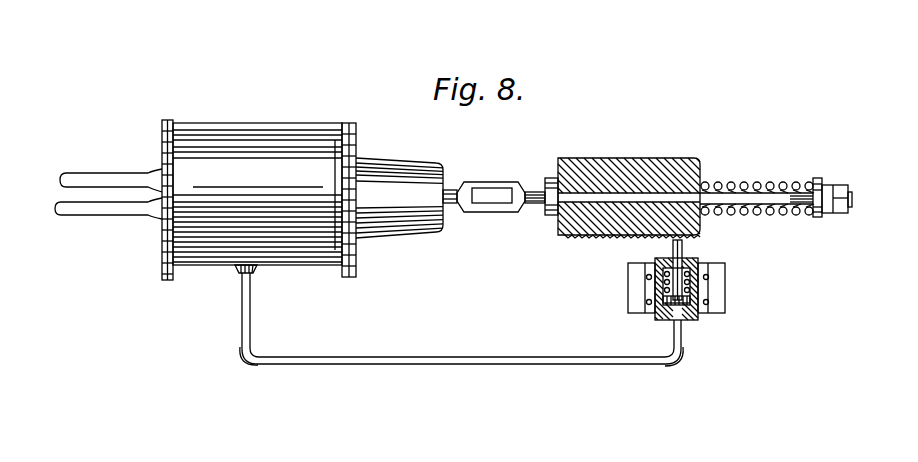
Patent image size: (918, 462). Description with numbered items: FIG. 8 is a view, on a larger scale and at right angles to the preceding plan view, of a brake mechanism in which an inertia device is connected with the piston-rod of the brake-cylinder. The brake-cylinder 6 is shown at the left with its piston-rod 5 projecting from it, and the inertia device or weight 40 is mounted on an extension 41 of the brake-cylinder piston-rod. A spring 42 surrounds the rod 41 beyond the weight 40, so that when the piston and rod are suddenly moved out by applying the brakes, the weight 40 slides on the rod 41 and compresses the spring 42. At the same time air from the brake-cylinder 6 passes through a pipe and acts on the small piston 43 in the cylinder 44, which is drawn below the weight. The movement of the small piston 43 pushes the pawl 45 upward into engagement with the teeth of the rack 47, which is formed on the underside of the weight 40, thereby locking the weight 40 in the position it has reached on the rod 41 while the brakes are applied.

The motor 6 is at (249, 200).
The shaft 5 is at (456, 205).
The inertia device or weight 40 is at (628, 148).
The rack 47 is at (607, 238).
The extension of the brake-cylinder piston-rod 41 is at (760, 206).
The spring 42 is at (757, 182).
The pawl 45 is at (683, 247).
The cylinder 44 is at (700, 287).
The small piston 43 is at (662, 308).